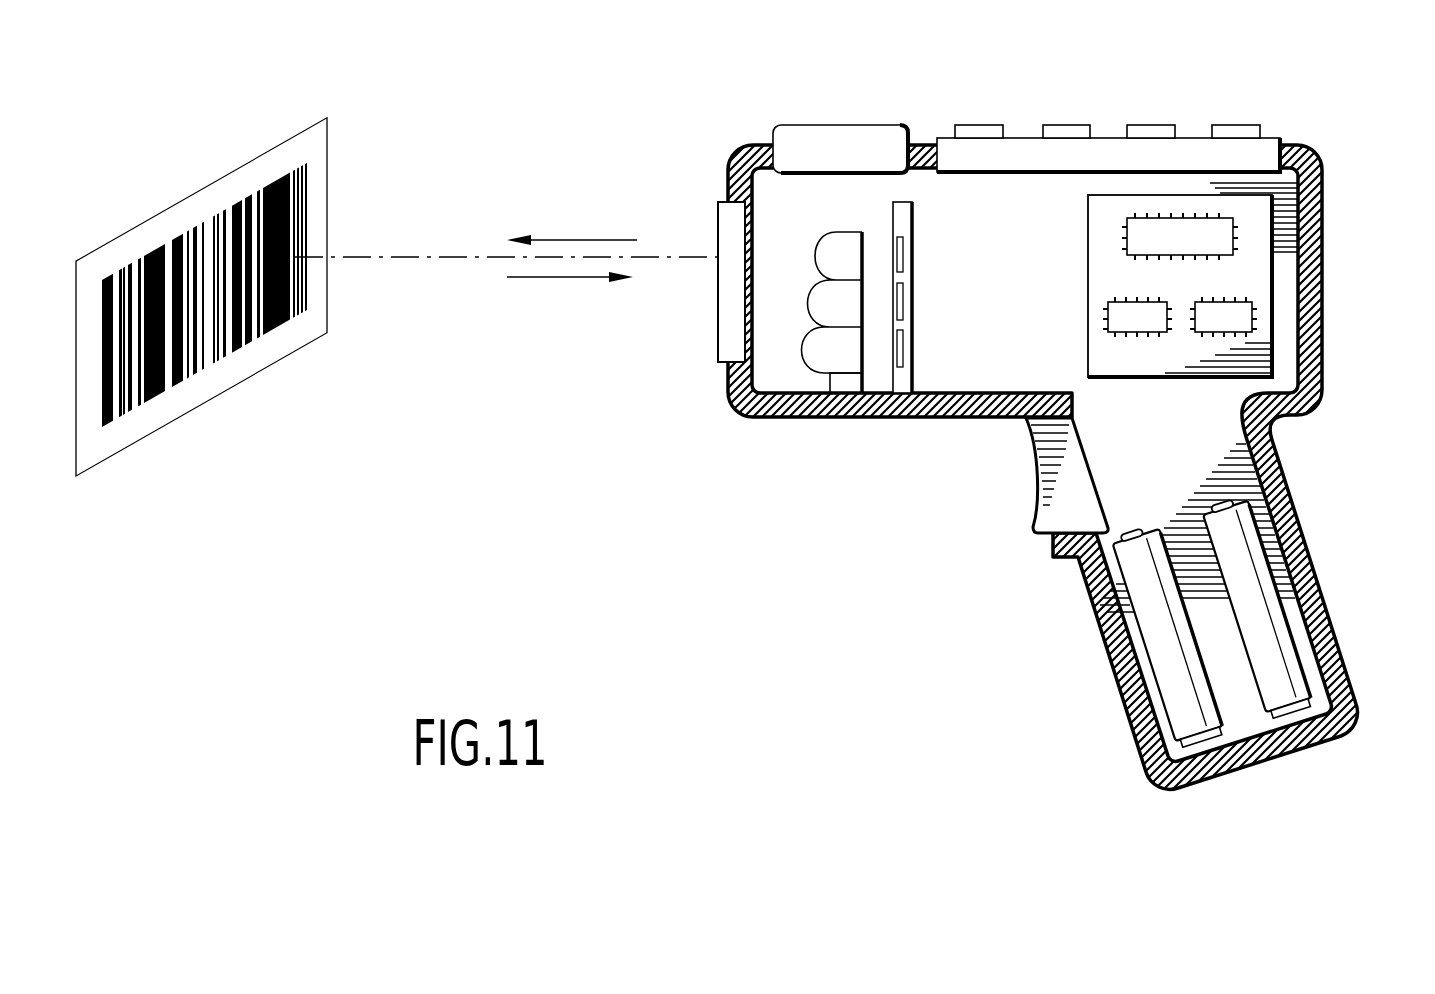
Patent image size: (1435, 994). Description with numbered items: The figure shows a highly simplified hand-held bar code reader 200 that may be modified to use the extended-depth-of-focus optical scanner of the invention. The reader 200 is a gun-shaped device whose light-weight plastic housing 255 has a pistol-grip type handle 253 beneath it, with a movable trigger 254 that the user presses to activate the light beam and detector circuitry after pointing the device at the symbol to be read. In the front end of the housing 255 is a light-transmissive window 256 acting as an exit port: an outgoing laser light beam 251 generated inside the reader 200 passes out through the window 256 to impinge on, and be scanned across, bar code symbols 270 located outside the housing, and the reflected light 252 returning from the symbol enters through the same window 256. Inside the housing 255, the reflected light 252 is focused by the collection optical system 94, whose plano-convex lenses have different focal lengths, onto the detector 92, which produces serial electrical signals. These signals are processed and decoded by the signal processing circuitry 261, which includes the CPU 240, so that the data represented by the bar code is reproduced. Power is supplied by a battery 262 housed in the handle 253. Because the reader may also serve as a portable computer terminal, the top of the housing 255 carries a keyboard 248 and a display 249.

The reader 200 is at (1045, 448).
The symbols 270 is at (318, 158).
The outgoing laser light beam 251 is at (572, 240).
The reflected light 252 is at (525, 284).
The housing 255 is at (1323, 353).
The handle 253 is at (1111, 657).
The trigger 254 is at (1064, 500).
The light-transmissive window 256 is at (718, 212).
The display 249 is at (843, 130).
The keyboard 248 is at (1197, 145).
The collection optical system 94 is at (838, 232).
The detector 92 is at (905, 217).
The signal processing circuitry 261 is at (1216, 280).
The CPU 240 is at (1147, 236).
The battery 262 is at (1277, 697).